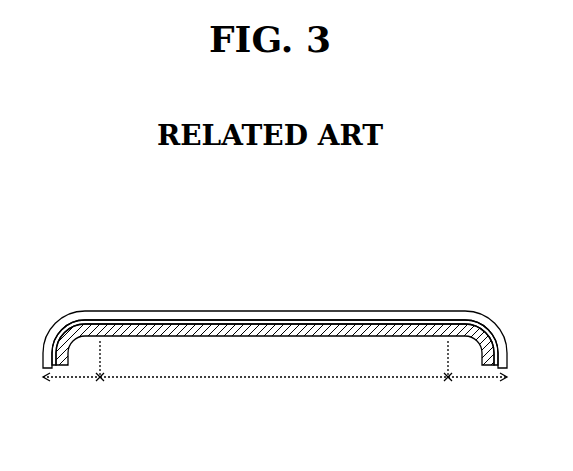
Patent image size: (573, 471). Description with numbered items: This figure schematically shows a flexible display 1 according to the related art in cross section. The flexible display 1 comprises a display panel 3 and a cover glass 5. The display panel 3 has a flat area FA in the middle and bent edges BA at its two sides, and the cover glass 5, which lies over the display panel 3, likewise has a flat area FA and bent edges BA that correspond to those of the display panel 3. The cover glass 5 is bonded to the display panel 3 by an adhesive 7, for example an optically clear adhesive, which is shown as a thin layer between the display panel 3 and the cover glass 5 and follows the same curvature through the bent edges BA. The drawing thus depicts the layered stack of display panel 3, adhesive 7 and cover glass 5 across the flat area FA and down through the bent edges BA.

The display device 1 is at (67, 291).
The display panel 3 is at (218, 330).
The cover glass 5 is at (326, 316).
The adhesive 7 is at (272, 322).
The bent edges BA is at (275, 373).
The flat area FA is at (274, 391).